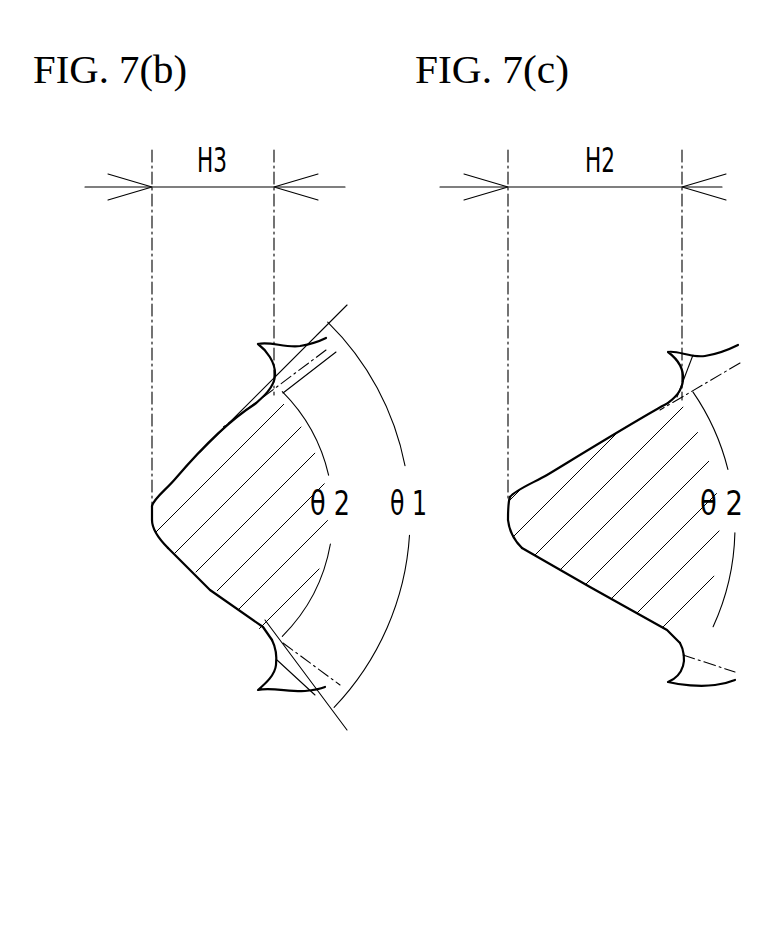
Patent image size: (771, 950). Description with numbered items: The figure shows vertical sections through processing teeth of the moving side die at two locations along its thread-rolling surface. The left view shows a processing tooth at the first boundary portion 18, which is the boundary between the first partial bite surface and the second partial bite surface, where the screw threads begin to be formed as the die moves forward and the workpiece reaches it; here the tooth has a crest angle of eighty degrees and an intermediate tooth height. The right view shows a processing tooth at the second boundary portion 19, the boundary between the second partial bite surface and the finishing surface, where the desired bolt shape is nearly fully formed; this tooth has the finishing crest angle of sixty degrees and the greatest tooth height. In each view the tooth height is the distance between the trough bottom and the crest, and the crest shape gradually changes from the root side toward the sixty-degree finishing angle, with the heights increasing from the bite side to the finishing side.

The first boundary portion 18 is at (190, 572).
The second boundary portion 19 is at (595, 587).